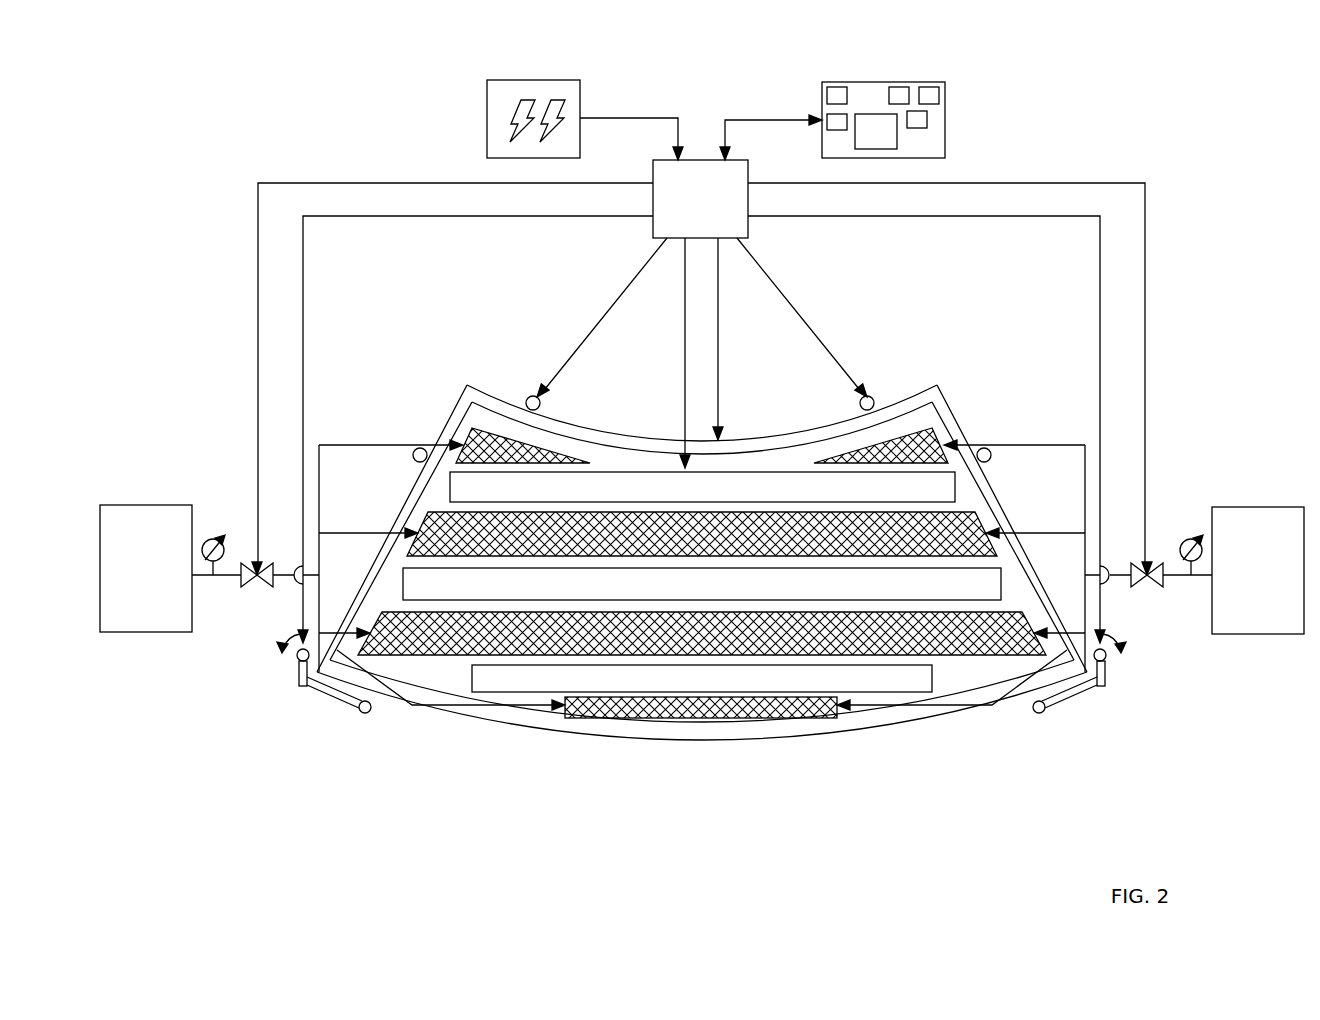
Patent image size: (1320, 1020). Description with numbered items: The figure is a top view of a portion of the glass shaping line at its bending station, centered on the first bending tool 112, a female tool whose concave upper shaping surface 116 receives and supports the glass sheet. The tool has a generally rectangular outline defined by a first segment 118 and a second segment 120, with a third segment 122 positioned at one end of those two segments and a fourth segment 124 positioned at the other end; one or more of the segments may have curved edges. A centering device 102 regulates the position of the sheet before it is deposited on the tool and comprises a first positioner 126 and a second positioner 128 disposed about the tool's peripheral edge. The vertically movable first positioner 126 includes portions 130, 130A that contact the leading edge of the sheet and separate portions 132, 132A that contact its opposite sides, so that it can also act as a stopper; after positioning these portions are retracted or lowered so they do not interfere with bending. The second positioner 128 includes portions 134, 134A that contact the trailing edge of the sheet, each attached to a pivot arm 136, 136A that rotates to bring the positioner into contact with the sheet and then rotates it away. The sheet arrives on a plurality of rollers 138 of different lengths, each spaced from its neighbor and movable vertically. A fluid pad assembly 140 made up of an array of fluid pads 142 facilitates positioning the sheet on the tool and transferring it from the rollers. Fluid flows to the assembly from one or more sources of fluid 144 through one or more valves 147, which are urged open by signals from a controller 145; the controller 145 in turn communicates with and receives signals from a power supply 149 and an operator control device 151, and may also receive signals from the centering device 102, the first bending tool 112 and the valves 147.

The centering device 102 is at (860, 340).
The first bending tool 112 is at (702, 592).
The shaping surface 116 is at (505, 712).
The first segment 118 is at (460, 413).
The second segment 120 is at (944, 413).
The third segment 122 is at (583, 725).
The fourth segment 124 is at (655, 442).
The first positioner 126 is at (533, 395).
The second positioner 128 is at (310, 688).
The portion 130 is at (541, 399).
The portion 130A is at (860, 398).
The portion 132 is at (416, 449).
The portion 132A is at (988, 449).
The portion 134 is at (364, 714).
The portion 134A is at (1090, 688).
The pivot arm 136 is at (295, 673).
The pivot arm 136A is at (1109, 673).
The plurality of rollers 138 is at (755, 492).
The fluid pad assembly 140 is at (237, 446).
The fluid pad 142 is at (493, 433).
The source of fluid 144 is at (131, 579).
The controller 145 is at (686, 208).
The valve 147 is at (221, 541).
The power supply 149 is at (532, 80).
The operator control device 151 is at (877, 82).